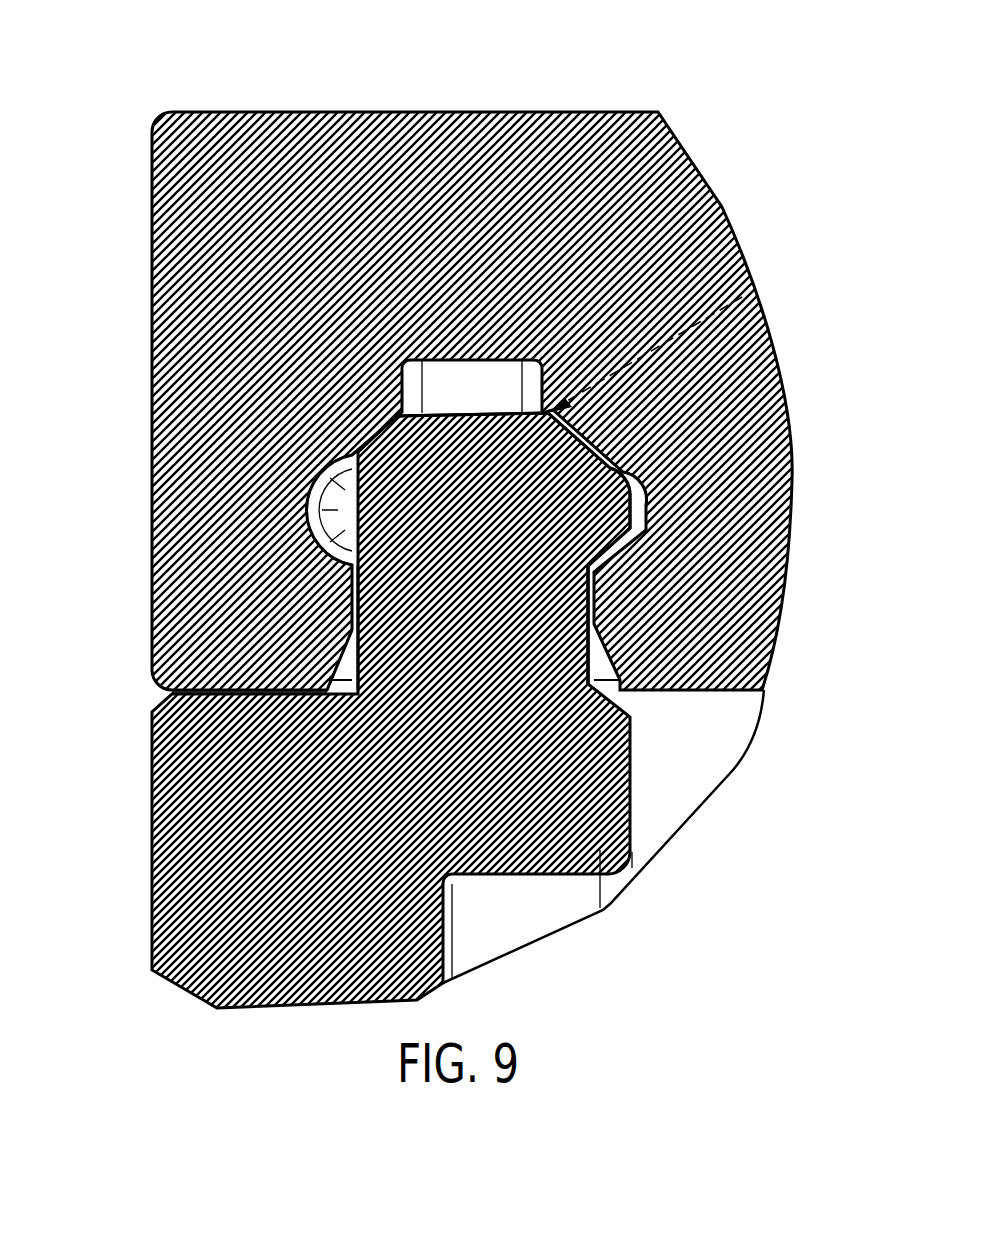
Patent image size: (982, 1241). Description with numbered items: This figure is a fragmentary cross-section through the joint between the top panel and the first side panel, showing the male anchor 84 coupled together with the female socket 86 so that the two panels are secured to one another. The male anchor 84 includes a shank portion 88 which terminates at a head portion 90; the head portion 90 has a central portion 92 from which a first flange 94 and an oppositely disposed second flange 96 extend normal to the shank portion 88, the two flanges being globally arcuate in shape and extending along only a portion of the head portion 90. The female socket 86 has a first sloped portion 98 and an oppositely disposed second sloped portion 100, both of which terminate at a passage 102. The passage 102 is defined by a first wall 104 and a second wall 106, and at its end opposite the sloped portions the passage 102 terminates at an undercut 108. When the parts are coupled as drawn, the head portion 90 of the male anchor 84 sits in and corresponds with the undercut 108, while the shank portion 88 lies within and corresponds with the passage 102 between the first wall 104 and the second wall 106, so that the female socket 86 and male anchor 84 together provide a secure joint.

The male anchor 84 is at (526, 828).
The female socket 86 is at (444, 250).
The shank portion 88 is at (165, 695).
The head portion 90 is at (405, 528).
The central portion 92 is at (513, 470).
The first flange 94 is at (340, 517).
The second flange 96 is at (630, 513).
The first sloped portion 98 is at (338, 650).
The second sloped portion 100 is at (660, 690).
The passage 102 is at (594, 588).
The first wall 104 is at (473, 608).
The second wall 106 is at (594, 613).
The undercut 108 is at (748, 292).